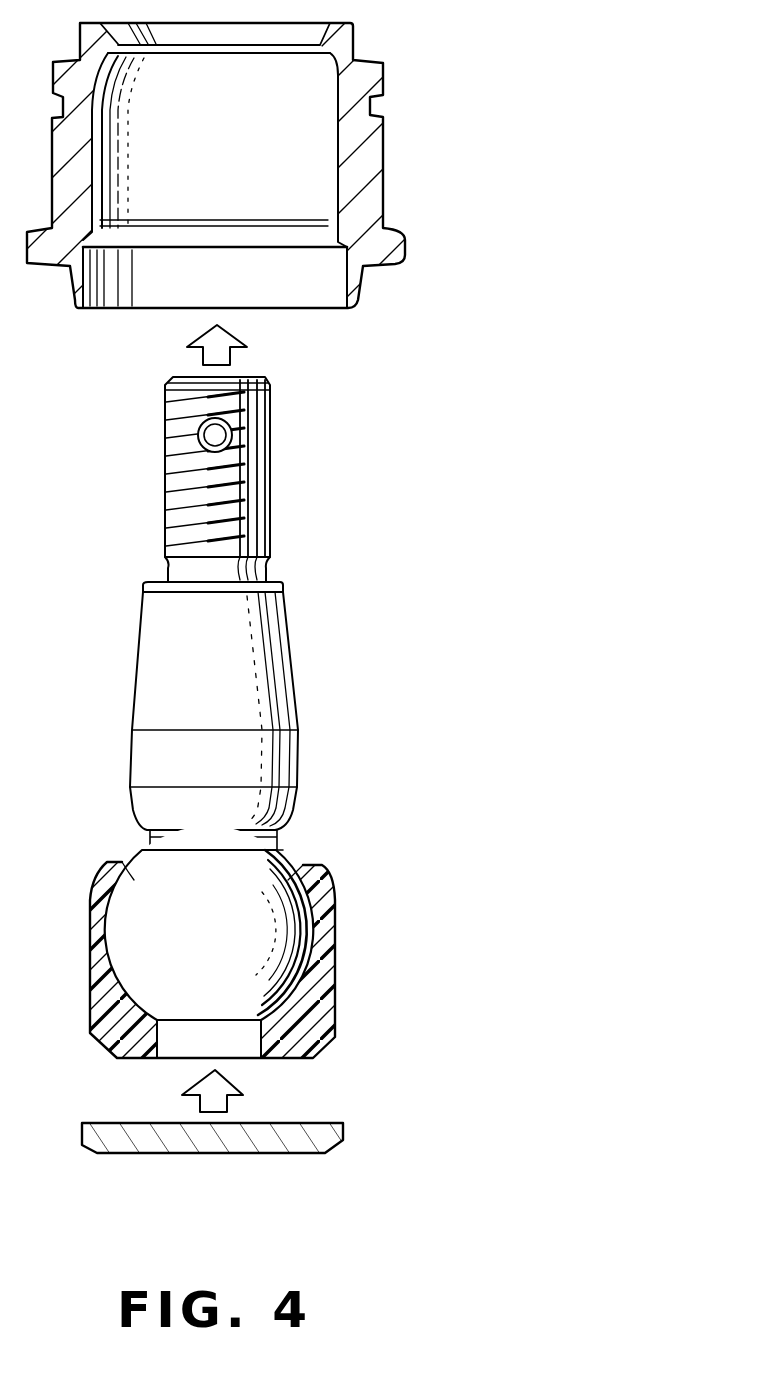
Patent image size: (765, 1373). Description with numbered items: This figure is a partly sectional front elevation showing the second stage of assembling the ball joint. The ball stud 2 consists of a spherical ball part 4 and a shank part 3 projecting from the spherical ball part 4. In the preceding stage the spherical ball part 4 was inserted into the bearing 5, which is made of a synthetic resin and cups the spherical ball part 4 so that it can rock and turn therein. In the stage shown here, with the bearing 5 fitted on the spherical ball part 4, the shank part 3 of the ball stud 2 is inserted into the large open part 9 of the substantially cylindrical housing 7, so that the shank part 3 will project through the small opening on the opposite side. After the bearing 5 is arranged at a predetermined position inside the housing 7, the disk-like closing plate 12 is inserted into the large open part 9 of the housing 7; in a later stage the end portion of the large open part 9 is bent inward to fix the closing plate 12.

The ball stud 2 is at (270, 480).
The shank part 3 is at (293, 657).
The spherical ball part 4 is at (152, 875).
The bearing 5 is at (327, 983).
The housing 7 is at (392, 179).
The large open part 9 is at (312, 292).
The closing plate 12 is at (345, 1137).